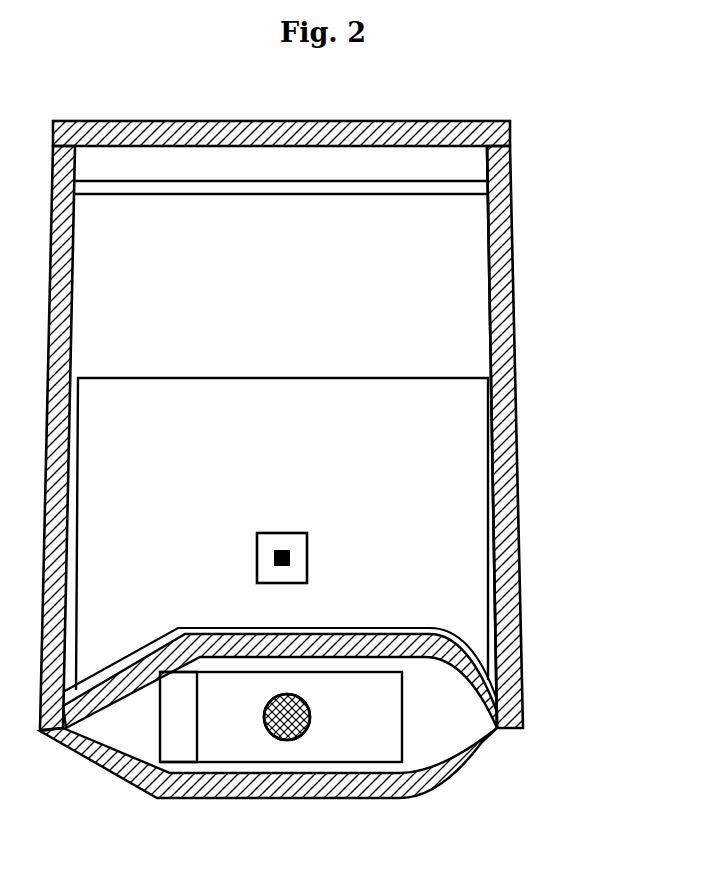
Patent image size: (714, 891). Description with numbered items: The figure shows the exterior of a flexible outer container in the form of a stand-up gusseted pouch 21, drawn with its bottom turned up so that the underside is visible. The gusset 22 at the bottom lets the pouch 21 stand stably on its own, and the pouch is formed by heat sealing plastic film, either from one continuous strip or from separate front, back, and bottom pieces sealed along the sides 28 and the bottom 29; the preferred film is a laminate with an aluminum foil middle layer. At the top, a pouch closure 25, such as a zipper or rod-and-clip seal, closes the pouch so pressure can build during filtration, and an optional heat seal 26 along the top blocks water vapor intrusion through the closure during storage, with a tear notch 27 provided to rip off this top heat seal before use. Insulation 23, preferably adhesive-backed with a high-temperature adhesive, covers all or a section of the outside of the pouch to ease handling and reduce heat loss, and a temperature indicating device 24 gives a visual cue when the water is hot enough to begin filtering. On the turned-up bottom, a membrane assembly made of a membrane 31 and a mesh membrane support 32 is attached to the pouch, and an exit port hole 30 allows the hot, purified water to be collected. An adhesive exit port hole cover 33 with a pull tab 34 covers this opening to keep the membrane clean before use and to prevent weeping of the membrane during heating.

The stand-up gusseted pouch 21 is at (322, 469).
The gusset 22 is at (465, 713).
The insulation 23 is at (140, 392).
The temperature indicating device 24 is at (307, 550).
The pouch closure 25 is at (473, 187).
The heat seal 26 is at (213, 121).
The tear notch 27 is at (500, 162).
The sides 28 is at (515, 309).
The bottom 29 is at (97, 752).
The exit port hole 30 is at (269, 762).
The membrane 31 is at (272, 697).
The mesh membrane support 32 is at (308, 725).
The adhesive exit port hole cover 33 is at (218, 762).
The pull tab 34 is at (175, 762).